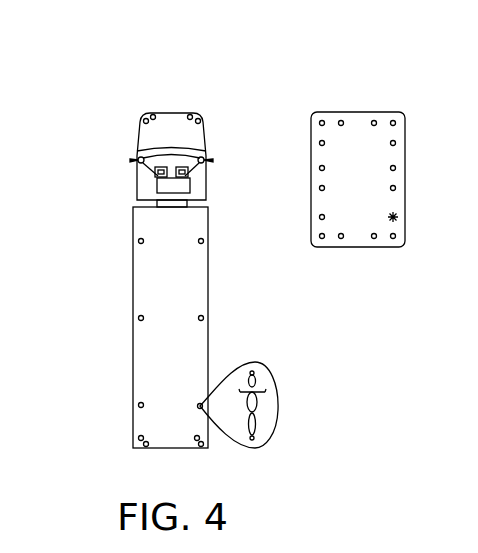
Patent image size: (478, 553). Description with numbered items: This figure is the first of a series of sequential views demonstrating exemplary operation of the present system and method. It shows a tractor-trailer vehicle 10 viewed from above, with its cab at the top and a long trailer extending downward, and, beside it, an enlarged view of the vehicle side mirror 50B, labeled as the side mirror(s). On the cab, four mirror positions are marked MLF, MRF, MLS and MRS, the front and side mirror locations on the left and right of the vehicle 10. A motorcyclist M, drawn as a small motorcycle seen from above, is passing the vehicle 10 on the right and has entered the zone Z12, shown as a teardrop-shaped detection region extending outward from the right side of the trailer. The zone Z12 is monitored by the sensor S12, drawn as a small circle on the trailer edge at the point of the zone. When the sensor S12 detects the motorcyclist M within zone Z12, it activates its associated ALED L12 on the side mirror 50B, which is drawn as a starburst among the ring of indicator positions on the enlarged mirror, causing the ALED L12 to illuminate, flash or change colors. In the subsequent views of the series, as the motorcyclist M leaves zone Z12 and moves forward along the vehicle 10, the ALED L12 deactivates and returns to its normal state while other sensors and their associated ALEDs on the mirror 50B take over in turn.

The tractor-trailer vehicle 10 is at (88, 128).
The vehicle side mirror 50B is at (311, 130).
The left front mirror MLF is at (133, 124).
The right front mirror MRF is at (212, 124).
The left side mirror MLS is at (123, 160).
The right side mirror MRS is at (222, 160).
The ALED L12 is at (400, 217).
The sensor S12 is at (197, 405).
The zone Z12 is at (273, 373).
The motorcyclist M is at (258, 404).